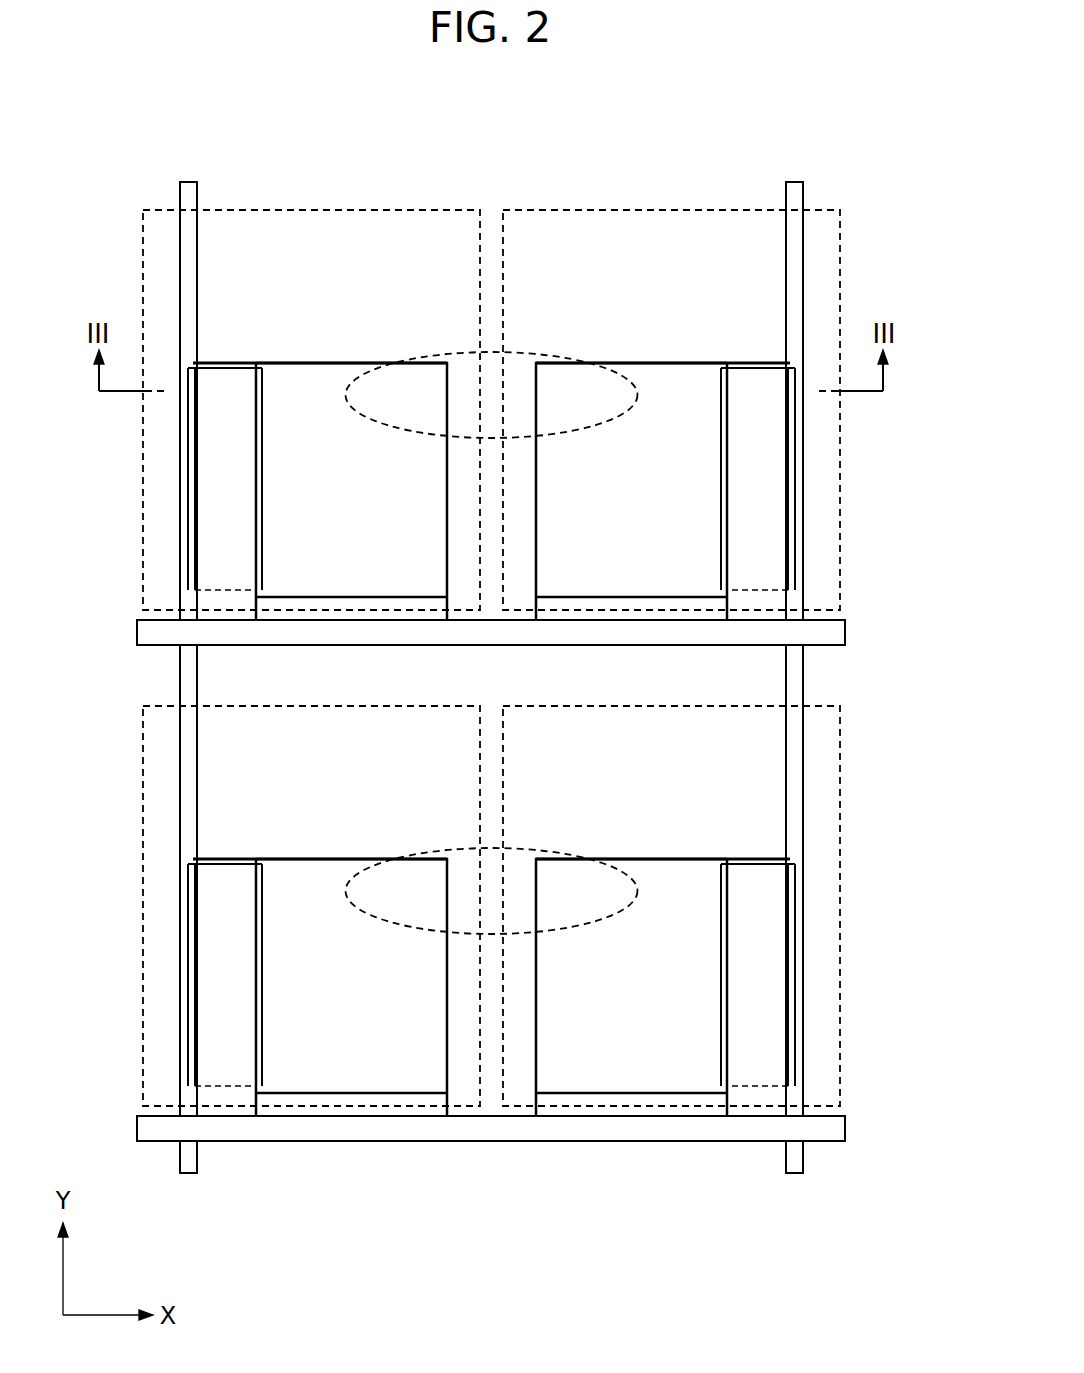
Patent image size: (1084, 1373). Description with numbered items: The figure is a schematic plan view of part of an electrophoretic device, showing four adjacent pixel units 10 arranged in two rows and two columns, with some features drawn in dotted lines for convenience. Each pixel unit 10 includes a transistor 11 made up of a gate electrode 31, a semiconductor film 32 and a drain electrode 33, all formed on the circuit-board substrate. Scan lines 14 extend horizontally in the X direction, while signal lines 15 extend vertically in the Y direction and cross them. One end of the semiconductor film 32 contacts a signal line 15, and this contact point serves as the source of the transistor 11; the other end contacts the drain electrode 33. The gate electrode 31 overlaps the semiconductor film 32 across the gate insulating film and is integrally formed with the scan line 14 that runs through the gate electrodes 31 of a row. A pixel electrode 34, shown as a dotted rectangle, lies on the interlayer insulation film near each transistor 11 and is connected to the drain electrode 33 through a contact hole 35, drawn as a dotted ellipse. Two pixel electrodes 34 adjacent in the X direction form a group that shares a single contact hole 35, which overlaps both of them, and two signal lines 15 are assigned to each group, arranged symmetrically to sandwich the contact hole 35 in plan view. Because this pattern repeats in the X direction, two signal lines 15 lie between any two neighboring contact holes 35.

The pixel unit 10 is at (134, 207).
The transistor 11 is at (162, 576).
The scan line 14 is at (833, 633).
The signal line 15 is at (188, 286).
The gate electrode 31 is at (215, 548).
The semiconductor film 32 is at (263, 388).
The drain electrode 33 is at (320, 378).
The pixel electrode 34 is at (388, 210).
The contact hole 35 is at (518, 345).